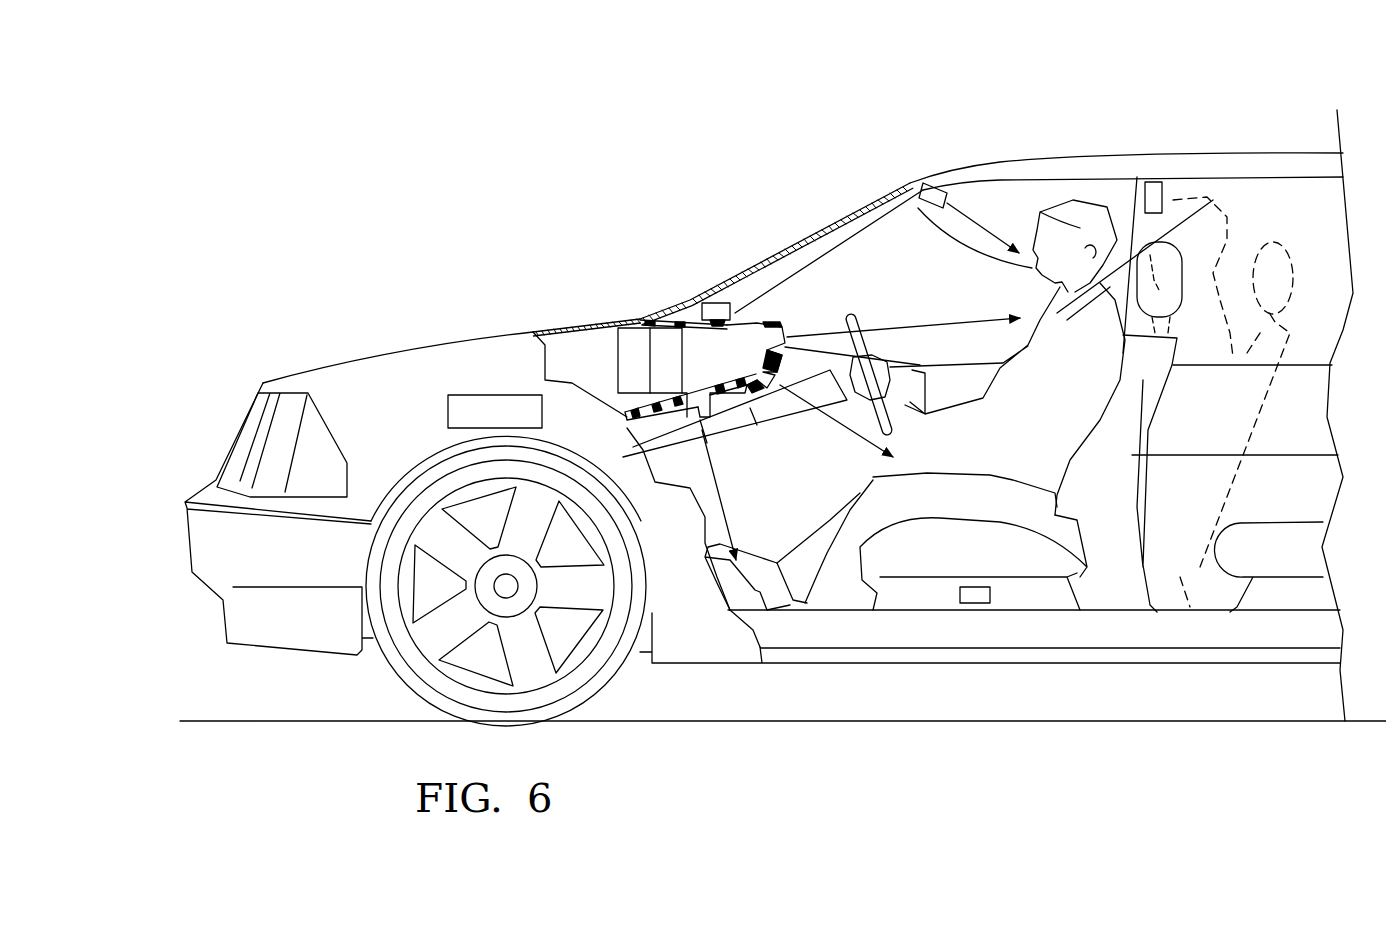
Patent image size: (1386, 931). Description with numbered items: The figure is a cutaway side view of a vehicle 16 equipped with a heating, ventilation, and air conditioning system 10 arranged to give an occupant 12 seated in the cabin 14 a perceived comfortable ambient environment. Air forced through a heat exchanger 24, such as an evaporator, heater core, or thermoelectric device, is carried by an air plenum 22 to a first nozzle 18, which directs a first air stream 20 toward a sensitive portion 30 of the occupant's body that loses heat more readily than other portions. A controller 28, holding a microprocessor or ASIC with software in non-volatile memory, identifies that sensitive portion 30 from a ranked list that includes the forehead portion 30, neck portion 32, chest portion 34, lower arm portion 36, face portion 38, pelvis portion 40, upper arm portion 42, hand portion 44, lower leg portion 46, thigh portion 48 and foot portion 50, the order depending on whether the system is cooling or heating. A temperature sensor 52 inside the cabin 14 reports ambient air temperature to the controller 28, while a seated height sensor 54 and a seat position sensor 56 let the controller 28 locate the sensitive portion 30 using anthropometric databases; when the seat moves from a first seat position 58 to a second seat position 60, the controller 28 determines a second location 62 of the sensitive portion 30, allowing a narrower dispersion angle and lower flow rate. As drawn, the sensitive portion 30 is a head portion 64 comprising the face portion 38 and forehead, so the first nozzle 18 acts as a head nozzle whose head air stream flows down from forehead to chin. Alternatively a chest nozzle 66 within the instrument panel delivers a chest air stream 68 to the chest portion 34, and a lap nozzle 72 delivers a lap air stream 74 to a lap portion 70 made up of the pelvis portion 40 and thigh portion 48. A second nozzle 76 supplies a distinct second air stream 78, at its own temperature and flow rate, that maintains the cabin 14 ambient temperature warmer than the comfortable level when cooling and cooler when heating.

The heating, ventilation, and air conditioning system 10 is at (738, 184).
The occupant 12 is at (915, 342).
The cabin 14 is at (1307, 136).
The vehicle 16 is at (1070, 88).
The first nozzle 18 is at (969, 157).
The first air stream 20 is at (975, 179).
The air plenum 22 is at (781, 211).
The heat exchanger 24 is at (646, 296).
The controller 28 is at (478, 345).
The sensitive portion 30 is at (1015, 186).
The neck portion 32 is at (1190, 150).
The chest portion 34 is at (907, 341).
The lower arm portion 36 is at (1008, 597).
The face portion 38 is at (984, 294).
The pelvis portion 40 is at (974, 633).
The upper arm portion 42 is at (1124, 481).
The hand portion 44 is at (839, 228).
The lower leg portion 46 is at (844, 672).
The thigh portion 48 is at (922, 661).
The foot portion 50 is at (700, 603).
The temperature sensor 52 is at (1169, 191).
The seated height sensor 54 is at (708, 251).
The seat position sensor 56 is at (982, 675).
The first seat position 58 is at (1138, 561).
The second seat position 60 is at (1261, 654).
The second location 62 is at (1111, 147).
The head portion 64 is at (897, 150).
The chest nozzle 66 is at (713, 295).
The chest air stream 68 is at (765, 299).
The lap portion 70 is at (941, 642).
The lap nozzle 72 is at (746, 581).
The lap air stream 74 is at (896, 636).
The second nozzle 76 is at (647, 595).
The second air stream 78 is at (692, 605).